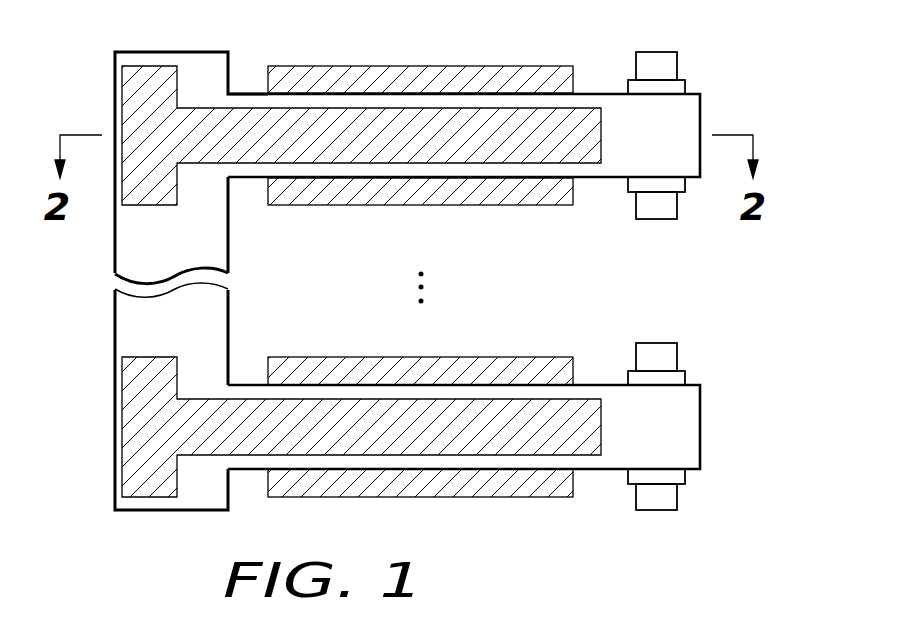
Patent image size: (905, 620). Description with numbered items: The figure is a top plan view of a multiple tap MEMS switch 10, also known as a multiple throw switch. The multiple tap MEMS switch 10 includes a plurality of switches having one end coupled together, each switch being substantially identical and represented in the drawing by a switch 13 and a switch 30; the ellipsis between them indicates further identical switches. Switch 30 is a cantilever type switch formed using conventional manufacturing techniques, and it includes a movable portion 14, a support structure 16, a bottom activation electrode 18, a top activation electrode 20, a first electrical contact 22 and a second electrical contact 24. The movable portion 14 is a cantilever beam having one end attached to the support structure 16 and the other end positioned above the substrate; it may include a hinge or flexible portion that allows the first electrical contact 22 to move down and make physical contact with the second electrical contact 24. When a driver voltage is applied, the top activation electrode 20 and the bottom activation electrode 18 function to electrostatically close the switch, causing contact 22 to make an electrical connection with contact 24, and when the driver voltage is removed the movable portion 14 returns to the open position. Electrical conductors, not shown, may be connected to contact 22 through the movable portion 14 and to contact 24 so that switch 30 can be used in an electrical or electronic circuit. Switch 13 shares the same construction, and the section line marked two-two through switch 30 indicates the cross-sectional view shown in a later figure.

The multiple tap MEMS switch 10 is at (424, 283).
The switch 13 is at (730, 414).
The movable portion 14 is at (615, 166).
The support structure 16 is at (113, 338).
The bottom activation electrode 18 is at (485, 73).
The top activation electrode 20 is at (582, 113).
The first electrical contact 22 is at (677, 88).
The second electrical contact 24 is at (653, 60).
The switch 30 is at (458, 122).